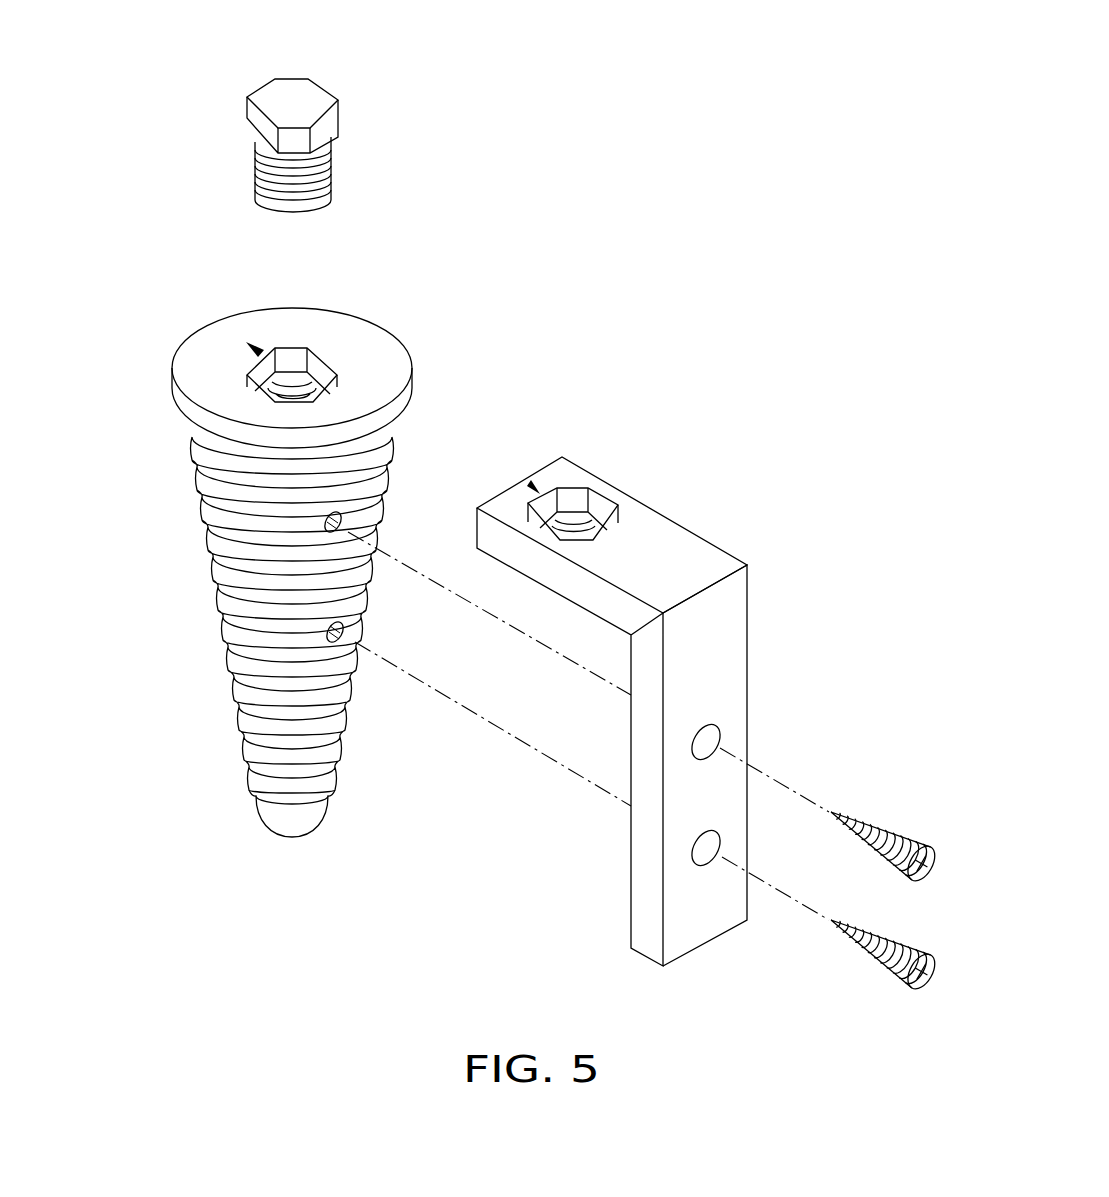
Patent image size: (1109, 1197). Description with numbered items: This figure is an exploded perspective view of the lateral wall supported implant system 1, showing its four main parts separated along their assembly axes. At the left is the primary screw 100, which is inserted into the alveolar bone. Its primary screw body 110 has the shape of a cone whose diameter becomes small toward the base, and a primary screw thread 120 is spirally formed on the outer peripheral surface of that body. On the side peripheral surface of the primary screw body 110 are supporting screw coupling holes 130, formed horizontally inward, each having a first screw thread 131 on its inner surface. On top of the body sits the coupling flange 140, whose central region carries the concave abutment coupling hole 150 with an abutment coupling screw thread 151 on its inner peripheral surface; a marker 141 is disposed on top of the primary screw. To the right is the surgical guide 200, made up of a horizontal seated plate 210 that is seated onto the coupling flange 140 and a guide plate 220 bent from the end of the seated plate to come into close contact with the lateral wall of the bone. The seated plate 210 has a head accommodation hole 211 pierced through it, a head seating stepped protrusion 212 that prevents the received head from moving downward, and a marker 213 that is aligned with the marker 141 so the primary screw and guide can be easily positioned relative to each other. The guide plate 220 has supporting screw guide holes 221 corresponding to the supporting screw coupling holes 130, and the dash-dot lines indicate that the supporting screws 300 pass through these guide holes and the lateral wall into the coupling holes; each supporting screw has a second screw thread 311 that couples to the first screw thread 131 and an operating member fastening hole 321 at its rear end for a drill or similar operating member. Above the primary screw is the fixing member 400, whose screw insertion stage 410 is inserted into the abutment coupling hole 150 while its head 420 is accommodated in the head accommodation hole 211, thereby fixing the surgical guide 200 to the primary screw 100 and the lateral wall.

The lateral wall supported implant system 1 is at (672, 214).
The primary screw 100 is at (166, 705).
The primary screw body 110 is at (240, 570).
The primary screw thread 120 is at (257, 620).
The supporting screw coupling holes 130 is at (240, 506).
The first screw thread 131 is at (352, 538).
The coupling flange 140 is at (203, 367).
The marker 141 is at (262, 352).
The abutment coupling hole 150 is at (317, 362).
The abutment coupling screw thread 151 is at (333, 370).
The surgical guide 200 is at (786, 548).
The seated plate 210 is at (668, 540).
The head accommodation hole 211 is at (604, 512).
The head seating stepped protrusion 212 is at (527, 505).
The marker 213 is at (595, 470).
The guide plate 220 is at (724, 641).
The supporting screw guide holes 221 is at (718, 724).
The supporting screws 300 is at (923, 845).
The second screw thread 311 is at (860, 822).
The operating member fastening hole 321 is at (930, 864).
The fixing member 400 is at (378, 127).
The screw insertion stage 410 is at (320, 180).
The head 420 is at (296, 100).